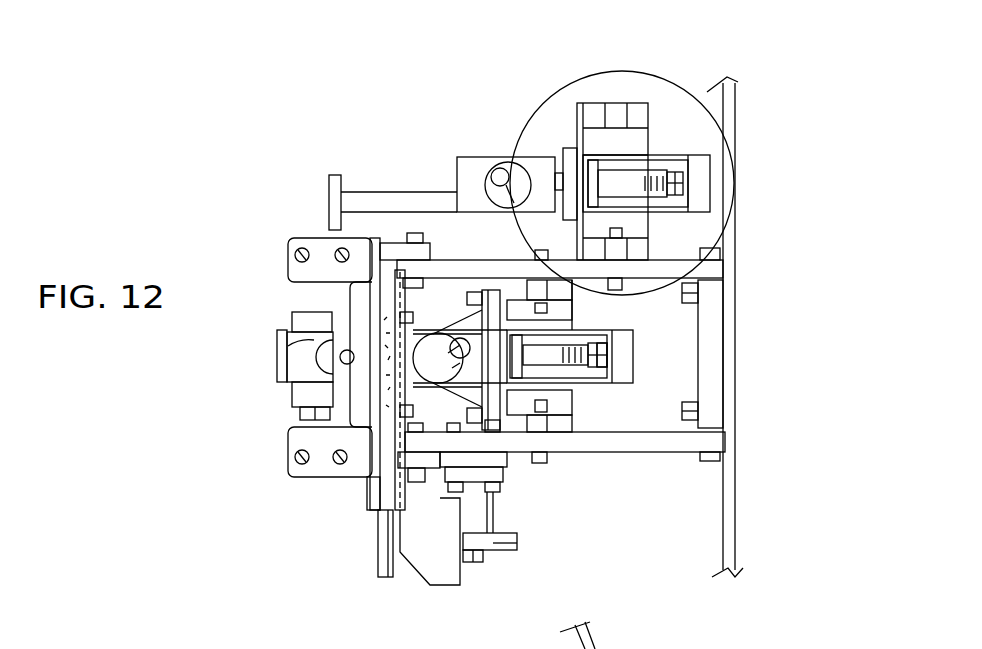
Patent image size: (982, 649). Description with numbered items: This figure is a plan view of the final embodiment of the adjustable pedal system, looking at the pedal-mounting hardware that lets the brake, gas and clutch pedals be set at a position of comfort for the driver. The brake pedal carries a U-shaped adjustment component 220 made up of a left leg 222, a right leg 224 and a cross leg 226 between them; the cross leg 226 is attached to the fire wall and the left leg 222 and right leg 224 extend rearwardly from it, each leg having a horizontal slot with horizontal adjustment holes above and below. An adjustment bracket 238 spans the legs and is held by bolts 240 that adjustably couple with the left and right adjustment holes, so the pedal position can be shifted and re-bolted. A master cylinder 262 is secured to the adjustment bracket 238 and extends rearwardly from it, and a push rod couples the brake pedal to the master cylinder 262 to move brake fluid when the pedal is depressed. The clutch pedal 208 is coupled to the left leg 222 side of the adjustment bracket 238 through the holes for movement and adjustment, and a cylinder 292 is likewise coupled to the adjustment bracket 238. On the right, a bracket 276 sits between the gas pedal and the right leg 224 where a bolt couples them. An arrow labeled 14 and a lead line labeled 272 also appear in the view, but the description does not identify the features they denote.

The actuator assembly 14 is at (527, 120).
The clutch pedal 208 is at (395, 192).
The adjustment component 220 is at (670, 452).
The left leg 222 is at (640, 260).
The right leg 224 is at (593, 454).
The cross leg 226 is at (715, 327).
The adjustment bracket 238 is at (668, 154).
The bolts 240 is at (511, 259).
The master cylinder 262 is at (310, 348).
The bolt 272 is at (577, 363).
The bracket 276 is at (438, 550).
The cylinder 292 is at (544, 156).